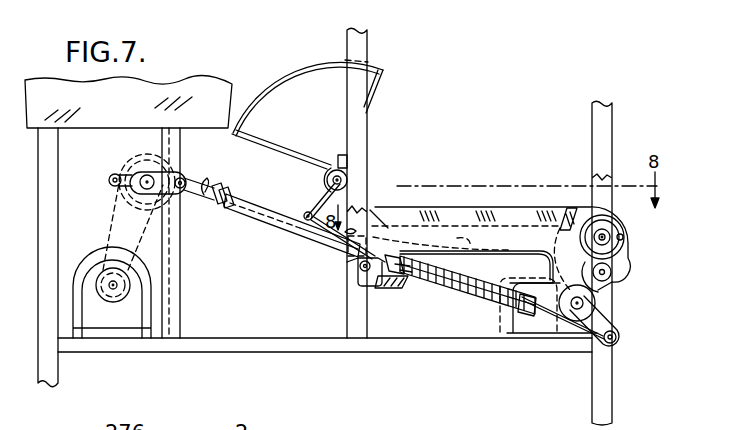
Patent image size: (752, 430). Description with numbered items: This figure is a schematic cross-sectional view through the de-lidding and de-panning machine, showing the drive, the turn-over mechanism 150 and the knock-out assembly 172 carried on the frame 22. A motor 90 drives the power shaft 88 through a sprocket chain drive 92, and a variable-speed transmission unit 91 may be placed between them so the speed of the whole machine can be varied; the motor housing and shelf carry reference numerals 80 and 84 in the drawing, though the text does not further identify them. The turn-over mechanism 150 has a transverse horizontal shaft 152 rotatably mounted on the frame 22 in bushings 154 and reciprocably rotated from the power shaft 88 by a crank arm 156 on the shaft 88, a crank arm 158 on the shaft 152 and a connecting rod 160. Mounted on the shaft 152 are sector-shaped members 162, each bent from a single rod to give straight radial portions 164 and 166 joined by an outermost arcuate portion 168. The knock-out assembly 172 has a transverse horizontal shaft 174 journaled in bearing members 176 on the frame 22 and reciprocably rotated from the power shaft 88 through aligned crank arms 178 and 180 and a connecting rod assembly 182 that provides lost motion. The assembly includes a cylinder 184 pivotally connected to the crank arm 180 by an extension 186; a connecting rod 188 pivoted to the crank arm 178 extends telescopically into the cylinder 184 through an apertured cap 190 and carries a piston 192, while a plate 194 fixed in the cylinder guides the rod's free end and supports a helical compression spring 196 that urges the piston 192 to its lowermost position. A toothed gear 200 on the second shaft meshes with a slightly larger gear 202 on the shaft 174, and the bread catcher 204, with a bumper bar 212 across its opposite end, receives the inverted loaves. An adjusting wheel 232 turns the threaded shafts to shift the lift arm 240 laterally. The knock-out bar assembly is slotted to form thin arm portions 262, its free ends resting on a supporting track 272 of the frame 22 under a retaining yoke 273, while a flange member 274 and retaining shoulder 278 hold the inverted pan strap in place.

The frame 22 is at (605, 147).
The shelf 80 is at (97, 118).
The idler pulley 84 is at (128, 148).
The power shaft 88 is at (147, 175).
The motor 90 is at (90, 258).
The variable-speed transmission unit 91 is at (124, 321).
The sprocket chain drive 92 is at (147, 240).
The turn-over mechanism 150 is at (238, 79).
The transverse horizontal shaft 152 is at (350, 177).
The bushings 154 is at (338, 158).
The crank arm 156 is at (115, 185).
The crank arm 158 is at (318, 200).
The connecting rod 160 is at (270, 207).
The sector-shaped member 162 is at (273, 78).
The radial portion 164 is at (265, 143).
The radial portion 166 is at (370, 107).
The arcuate portion 168 is at (318, 62).
The knock-out assembly 172 is at (414, 289).
The transverse horizontal shaft 174 is at (585, 302).
The bearing members 176 is at (542, 325).
The crank arm 178 is at (612, 330).
The crank arm 180 is at (162, 173).
The connecting rod assembly 182 is at (305, 243).
The cylinder 184 is at (273, 228).
The extension 186 is at (212, 197).
The connecting rod 188 is at (553, 320).
The apertured cap 190 is at (535, 327).
The piston 192 is at (508, 308).
The plate 194 is at (407, 276).
The helical compression spring 196 is at (480, 296).
The toothed gear 200 is at (520, 280).
The gear 202 is at (630, 272).
The bread catcher 204 is at (393, 289).
The bumper bar 212 is at (357, 268).
The adjusting wheel 232 is at (625, 228).
The lift arm 240 is at (567, 207).
The arm portions 262 is at (460, 227).
The supporting track 272 is at (353, 272).
The retaining yoke 273 is at (353, 230).
The flange member 274 is at (487, 210).
The retaining shoulder 278 is at (380, 223).